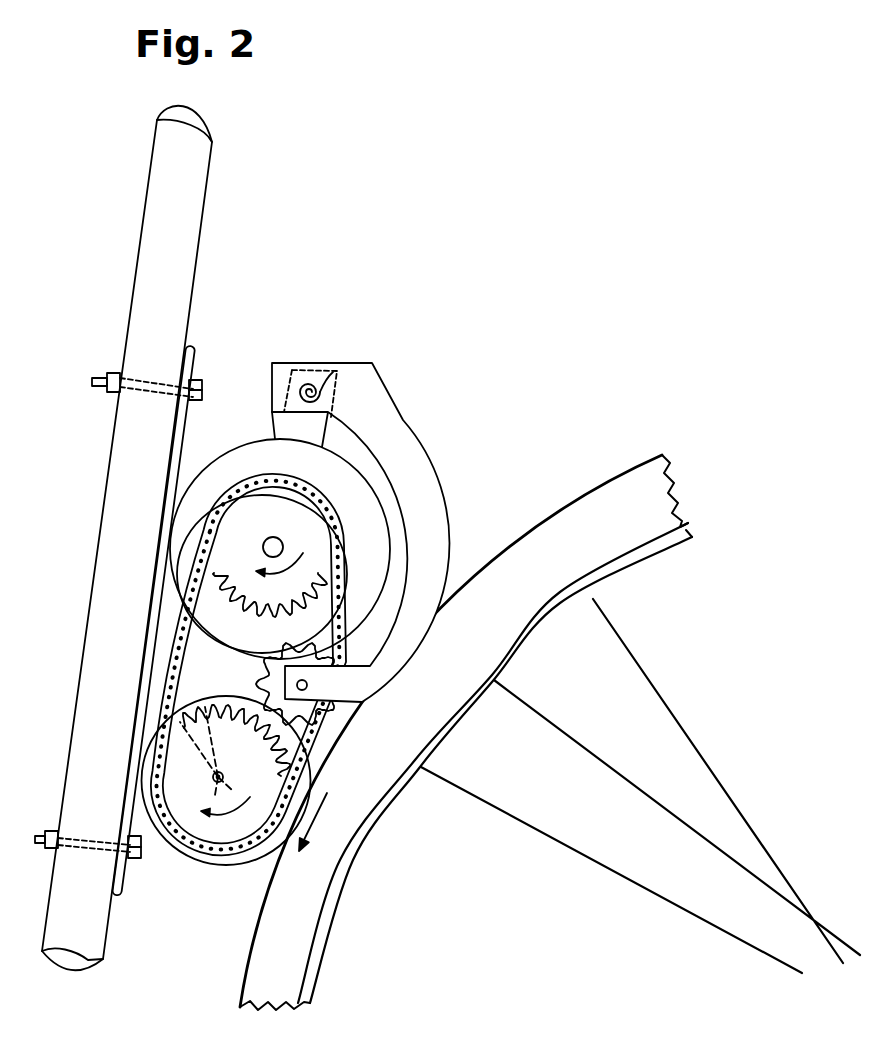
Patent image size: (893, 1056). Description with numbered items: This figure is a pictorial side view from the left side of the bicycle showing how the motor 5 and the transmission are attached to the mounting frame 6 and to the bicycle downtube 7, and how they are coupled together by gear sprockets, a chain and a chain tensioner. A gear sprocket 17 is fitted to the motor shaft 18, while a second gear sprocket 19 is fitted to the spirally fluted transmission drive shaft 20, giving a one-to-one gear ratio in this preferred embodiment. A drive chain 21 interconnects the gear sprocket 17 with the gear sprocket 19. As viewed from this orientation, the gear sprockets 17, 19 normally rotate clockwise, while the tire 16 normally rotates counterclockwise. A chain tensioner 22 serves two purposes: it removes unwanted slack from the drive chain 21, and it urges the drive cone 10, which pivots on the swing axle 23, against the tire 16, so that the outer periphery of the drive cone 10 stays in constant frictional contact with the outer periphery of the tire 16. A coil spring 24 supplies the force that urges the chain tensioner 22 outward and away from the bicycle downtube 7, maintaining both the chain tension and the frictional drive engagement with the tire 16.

The motor 5 is at (244, 458).
The mounting frame 6 is at (188, 357).
The bicycle downtube 7 is at (183, 300).
The drive cone 10 is at (173, 843).
The tire 16 is at (263, 952).
The gear sprocket 17 is at (240, 528).
The motor shaft 18 is at (291, 533).
The gear sprocket 19 is at (212, 825).
The spirally fluted transmission drive shaft 20 is at (228, 781).
The drive chain 21 is at (186, 666).
The chain tensioner 22 is at (403, 420).
The swing axle 23 is at (171, 673).
The coil spring 24 is at (323, 385).